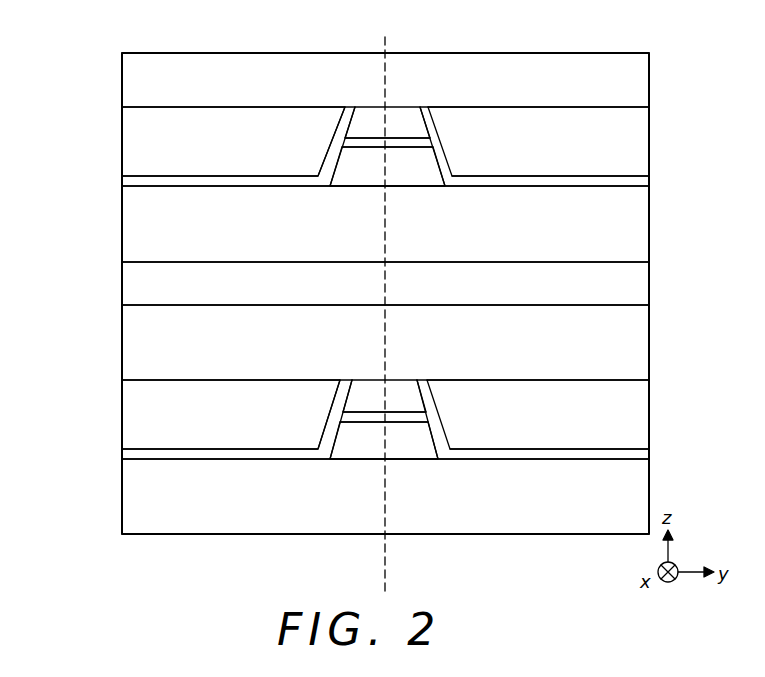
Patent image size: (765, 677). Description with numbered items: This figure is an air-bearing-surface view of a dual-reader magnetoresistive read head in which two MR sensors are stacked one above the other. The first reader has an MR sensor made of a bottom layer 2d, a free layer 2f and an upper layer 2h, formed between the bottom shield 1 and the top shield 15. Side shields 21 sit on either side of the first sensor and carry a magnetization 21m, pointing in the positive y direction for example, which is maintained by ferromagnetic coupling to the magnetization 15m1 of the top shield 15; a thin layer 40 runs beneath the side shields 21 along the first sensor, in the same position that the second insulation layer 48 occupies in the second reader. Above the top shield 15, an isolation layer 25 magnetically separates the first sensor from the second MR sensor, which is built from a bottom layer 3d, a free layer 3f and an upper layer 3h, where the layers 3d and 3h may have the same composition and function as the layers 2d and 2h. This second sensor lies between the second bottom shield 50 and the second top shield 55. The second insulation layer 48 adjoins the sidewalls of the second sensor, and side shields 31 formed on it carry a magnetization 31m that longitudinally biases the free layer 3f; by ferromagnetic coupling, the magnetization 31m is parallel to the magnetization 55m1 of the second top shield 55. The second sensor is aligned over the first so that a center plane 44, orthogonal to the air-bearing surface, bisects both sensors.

The bottom shield 1 is at (638, 490).
The lower insulating/barrier layer 40 is at (132, 456).
The side shields 21 is at (132, 417).
The bottom layer 2d is at (352, 450).
The free layer 2f is at (373, 417).
The upper layer 2h is at (412, 402).
The top shield 15 is at (638, 348).
The isolation layer 25 is at (638, 285).
The second bottom shield 50 is at (638, 225).
The second insulation layer 48 is at (132, 183).
The side shields 31 is at (133, 134).
The upper layer 3h is at (359, 118).
The free layer 3f is at (370, 143).
The bottom layer 3d is at (402, 165).
The second top shield 55 is at (638, 82).
The center plane 44 is at (387, 308).
The magnetization 31m is at (260, 151).
The magnetization 55m1 is at (560, 92).
The magnetization 15m1 is at (560, 353).
The magnetization 21m is at (260, 423).